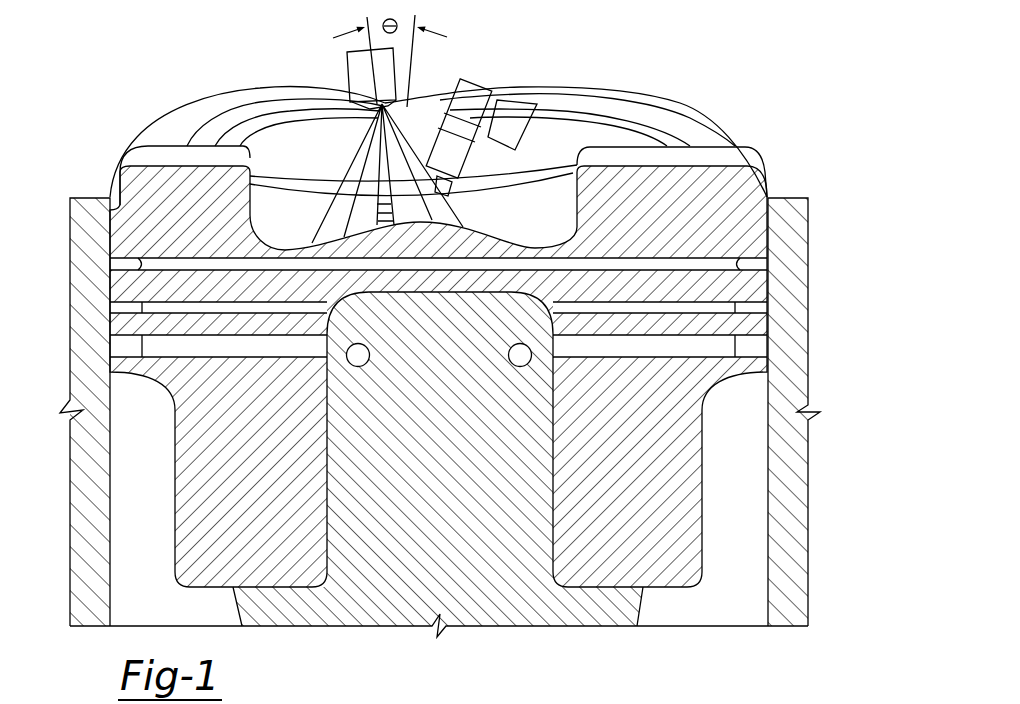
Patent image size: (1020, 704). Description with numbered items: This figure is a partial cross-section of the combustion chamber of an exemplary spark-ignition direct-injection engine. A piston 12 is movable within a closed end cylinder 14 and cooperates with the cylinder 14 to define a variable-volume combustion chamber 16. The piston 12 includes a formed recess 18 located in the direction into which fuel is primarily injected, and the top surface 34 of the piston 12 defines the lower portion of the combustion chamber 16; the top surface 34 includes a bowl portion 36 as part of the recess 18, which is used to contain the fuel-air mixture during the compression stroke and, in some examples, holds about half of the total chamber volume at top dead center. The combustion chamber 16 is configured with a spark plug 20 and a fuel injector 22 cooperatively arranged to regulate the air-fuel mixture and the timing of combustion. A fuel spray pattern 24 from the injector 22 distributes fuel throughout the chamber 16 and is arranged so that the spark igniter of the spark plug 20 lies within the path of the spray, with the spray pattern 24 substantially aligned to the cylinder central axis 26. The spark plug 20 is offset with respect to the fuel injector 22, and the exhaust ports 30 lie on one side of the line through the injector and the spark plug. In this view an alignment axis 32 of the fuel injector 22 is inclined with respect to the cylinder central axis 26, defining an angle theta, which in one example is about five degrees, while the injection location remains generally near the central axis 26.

The piston 12 is at (140, 237).
The cylinder 14 is at (764, 495).
The combustion chamber 16 is at (177, 128).
The recess 18 is at (258, 172).
The spark plug 20 is at (480, 78).
The fuel injector 22 is at (352, 66).
The fuel spray pattern 24 is at (357, 153).
The cylinder central axis 26 is at (412, 52).
The exhaust ports 30 is at (266, 130).
The alignment axis 32 is at (367, 16).
The top surface 34 is at (710, 157).
The bowl portion 36 is at (283, 206).